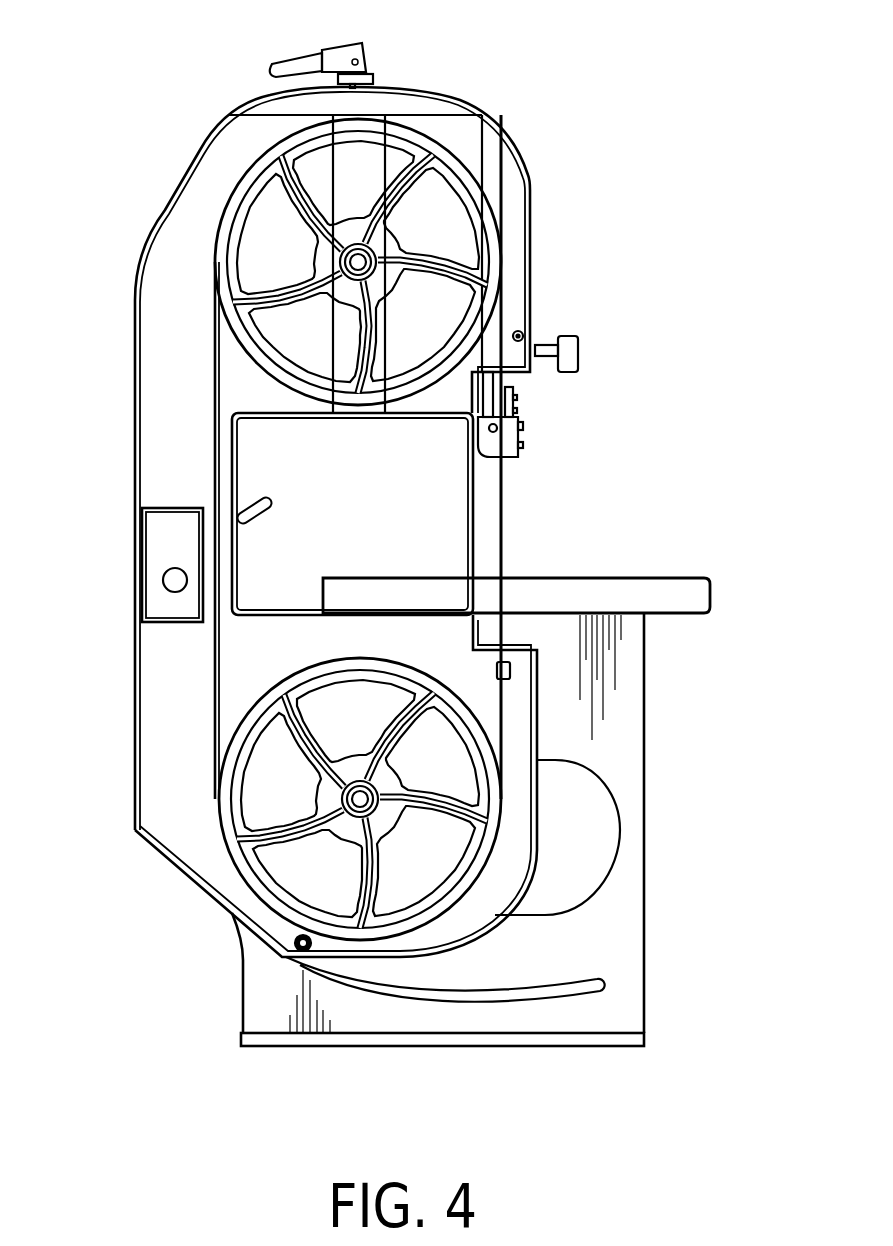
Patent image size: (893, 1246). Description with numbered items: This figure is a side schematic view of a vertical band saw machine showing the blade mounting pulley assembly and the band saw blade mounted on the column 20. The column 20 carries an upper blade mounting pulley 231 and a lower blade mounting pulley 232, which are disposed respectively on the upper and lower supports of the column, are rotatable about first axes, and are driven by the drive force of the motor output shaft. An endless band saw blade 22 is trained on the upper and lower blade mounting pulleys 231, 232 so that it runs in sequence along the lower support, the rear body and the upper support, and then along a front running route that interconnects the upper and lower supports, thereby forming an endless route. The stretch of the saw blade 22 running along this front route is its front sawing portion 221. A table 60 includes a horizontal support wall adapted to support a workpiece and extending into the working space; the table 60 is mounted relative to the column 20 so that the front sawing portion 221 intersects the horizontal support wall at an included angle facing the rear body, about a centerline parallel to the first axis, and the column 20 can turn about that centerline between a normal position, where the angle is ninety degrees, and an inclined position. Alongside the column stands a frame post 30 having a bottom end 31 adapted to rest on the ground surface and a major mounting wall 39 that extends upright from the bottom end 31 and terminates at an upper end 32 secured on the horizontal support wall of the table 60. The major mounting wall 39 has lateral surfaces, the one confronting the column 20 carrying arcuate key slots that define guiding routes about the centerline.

The column 20 is at (172, 185).
The endless band saw blade 22 is at (217, 383).
The front sawing portion 221 is at (503, 518).
The upper blade mounting pulley 231 is at (417, 157).
The lower blade mounting pulley 232 is at (260, 882).
The frame post 30 is at (655, 890).
The bottom end 31 is at (555, 1047).
The upper end 32 is at (597, 615).
The major mounting wall 39 is at (612, 952).
The table 60 is at (628, 568).